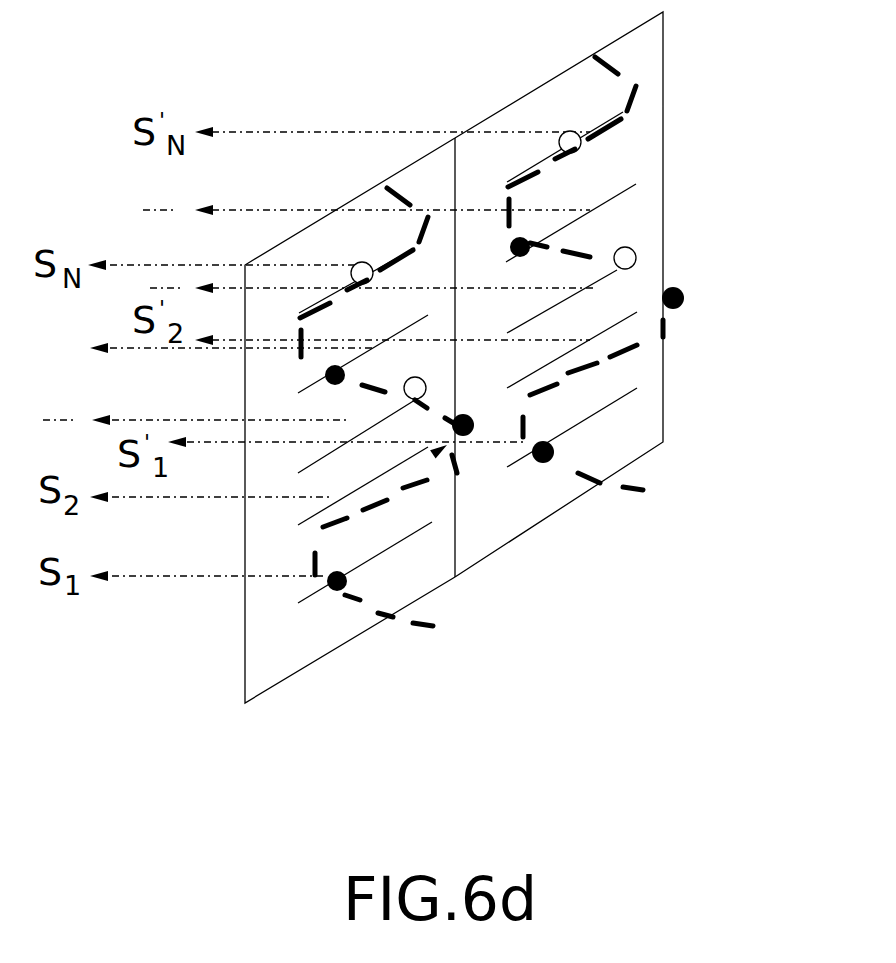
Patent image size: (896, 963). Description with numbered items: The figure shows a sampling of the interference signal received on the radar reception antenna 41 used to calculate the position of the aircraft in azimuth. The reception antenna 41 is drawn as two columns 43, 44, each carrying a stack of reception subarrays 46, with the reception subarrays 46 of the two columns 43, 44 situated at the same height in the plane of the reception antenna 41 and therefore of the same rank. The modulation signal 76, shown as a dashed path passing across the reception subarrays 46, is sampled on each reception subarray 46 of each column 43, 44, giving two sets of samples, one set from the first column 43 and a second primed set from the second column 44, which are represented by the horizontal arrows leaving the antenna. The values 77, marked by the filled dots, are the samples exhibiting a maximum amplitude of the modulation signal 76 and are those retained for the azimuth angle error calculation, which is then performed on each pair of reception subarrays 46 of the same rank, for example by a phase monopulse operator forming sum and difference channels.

The reception antenna 41 is at (526, 423).
The column 43 is at (353, 640).
The column 44 is at (666, 417).
The reception subarray 46 is at (676, 77).
The modulation signal 76 is at (618, 510).
The values 77 is at (448, 442).